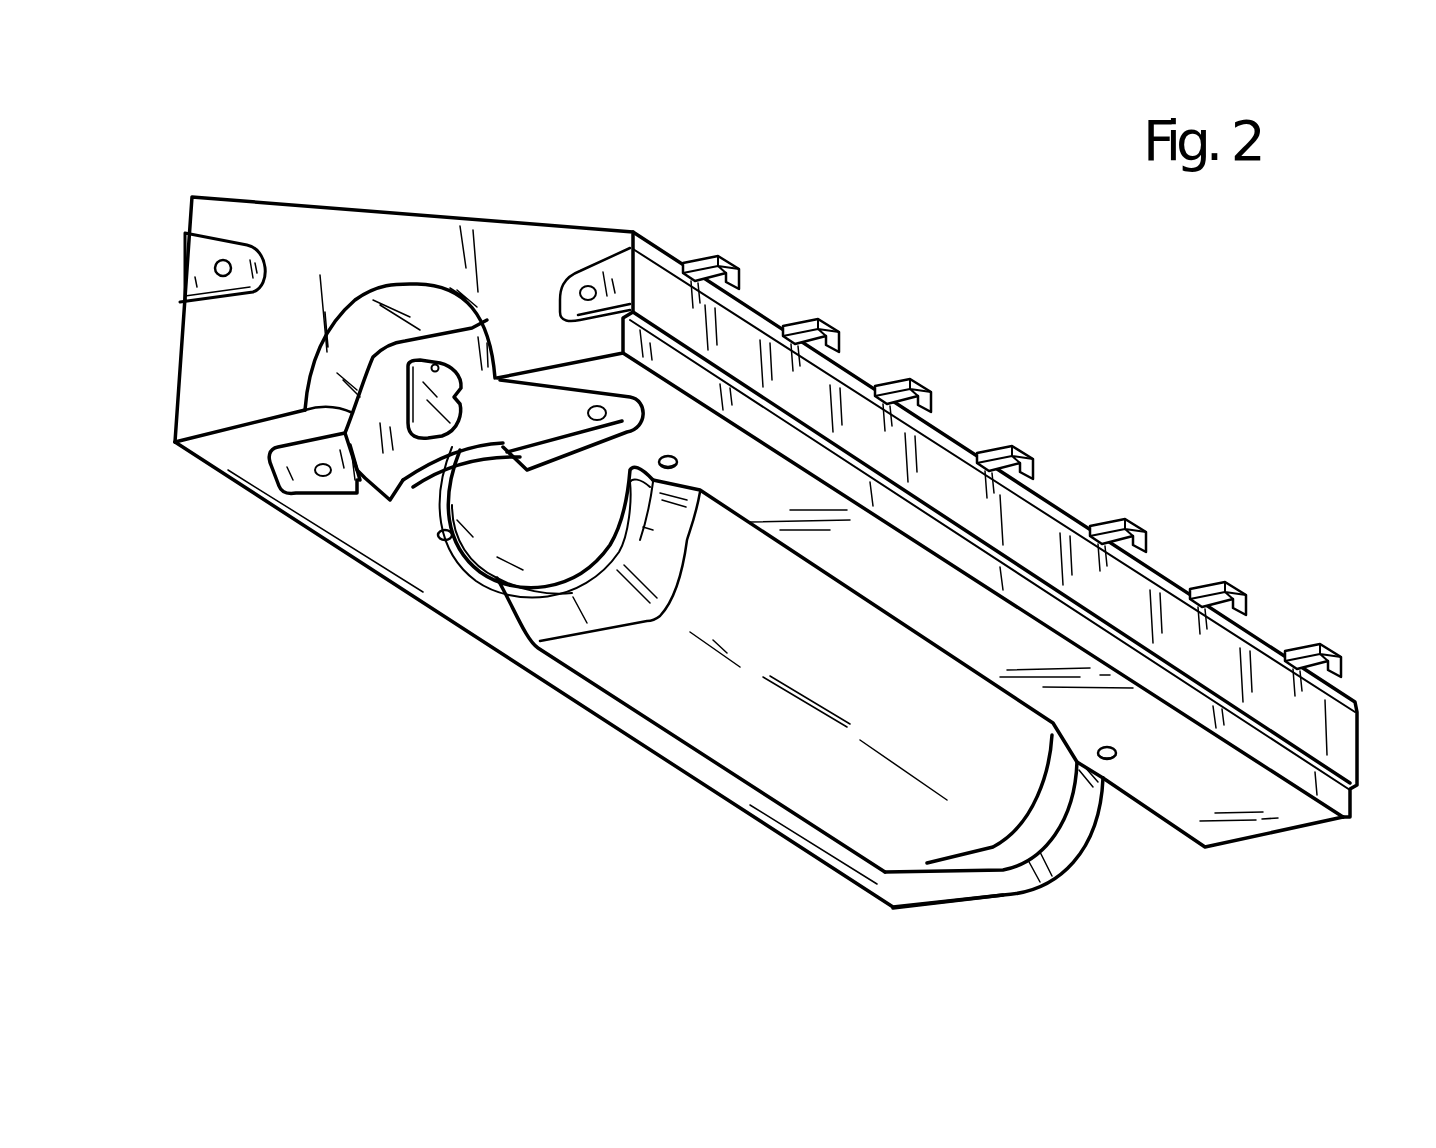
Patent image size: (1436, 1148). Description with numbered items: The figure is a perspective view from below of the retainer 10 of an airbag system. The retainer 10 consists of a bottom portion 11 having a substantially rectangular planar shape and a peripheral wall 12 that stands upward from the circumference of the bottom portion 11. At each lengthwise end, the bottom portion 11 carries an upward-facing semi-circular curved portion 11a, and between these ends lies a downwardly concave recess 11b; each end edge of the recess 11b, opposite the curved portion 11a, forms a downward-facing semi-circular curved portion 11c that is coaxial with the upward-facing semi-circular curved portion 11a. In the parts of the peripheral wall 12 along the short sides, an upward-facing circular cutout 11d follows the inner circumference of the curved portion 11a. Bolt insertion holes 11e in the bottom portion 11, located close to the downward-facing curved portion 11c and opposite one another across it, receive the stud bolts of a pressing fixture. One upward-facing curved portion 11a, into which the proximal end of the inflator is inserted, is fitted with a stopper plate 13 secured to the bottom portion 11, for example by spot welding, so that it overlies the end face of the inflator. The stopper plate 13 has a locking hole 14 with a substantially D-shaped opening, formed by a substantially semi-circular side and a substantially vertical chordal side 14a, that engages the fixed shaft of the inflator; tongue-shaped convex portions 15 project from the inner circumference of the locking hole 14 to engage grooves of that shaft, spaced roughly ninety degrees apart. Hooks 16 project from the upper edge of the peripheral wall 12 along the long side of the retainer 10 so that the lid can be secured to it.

The retainer 10 is at (1062, 332).
The bottom portion 11 is at (347, 527).
The upward-facing semi-circular curved portion 11a is at (447, 473).
The recess 11b is at (717, 743).
The downward-facing semi-circular curved portion 11c is at (568, 555).
The upward-facing circular cutout 11d is at (403, 287).
The bolt insertion hole 11e is at (447, 540).
The peripheral wall 12 is at (350, 222).
The stopper plate 13 is at (305, 408).
The locking hole 14 is at (430, 436).
The chordal side 14a is at (403, 400).
The convex portion 15 is at (436, 366).
The hook 16 is at (733, 262).